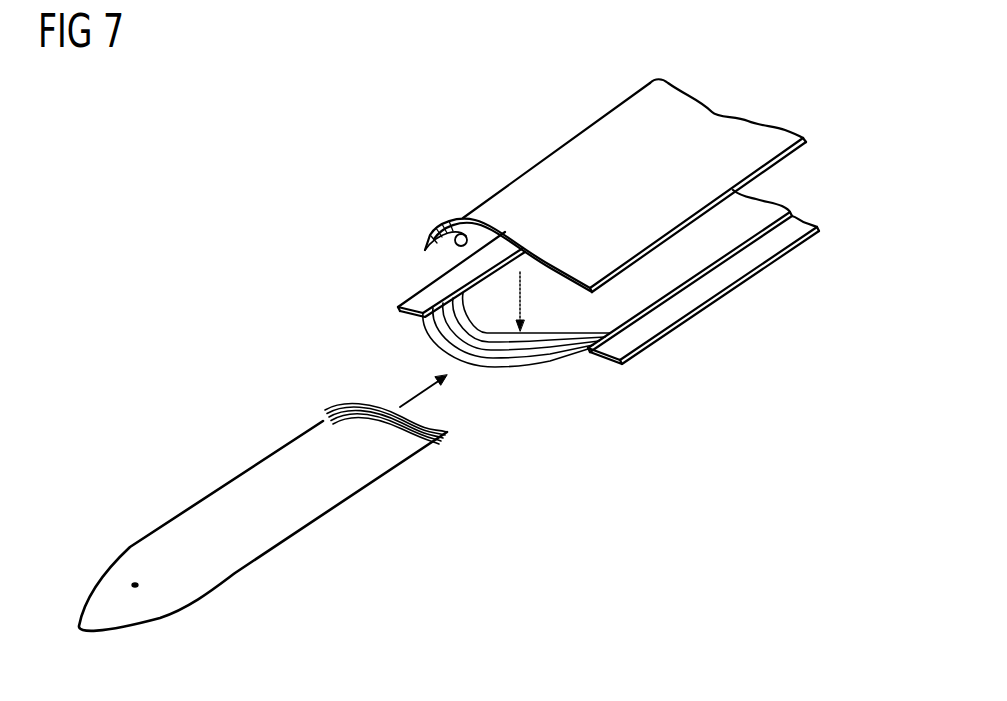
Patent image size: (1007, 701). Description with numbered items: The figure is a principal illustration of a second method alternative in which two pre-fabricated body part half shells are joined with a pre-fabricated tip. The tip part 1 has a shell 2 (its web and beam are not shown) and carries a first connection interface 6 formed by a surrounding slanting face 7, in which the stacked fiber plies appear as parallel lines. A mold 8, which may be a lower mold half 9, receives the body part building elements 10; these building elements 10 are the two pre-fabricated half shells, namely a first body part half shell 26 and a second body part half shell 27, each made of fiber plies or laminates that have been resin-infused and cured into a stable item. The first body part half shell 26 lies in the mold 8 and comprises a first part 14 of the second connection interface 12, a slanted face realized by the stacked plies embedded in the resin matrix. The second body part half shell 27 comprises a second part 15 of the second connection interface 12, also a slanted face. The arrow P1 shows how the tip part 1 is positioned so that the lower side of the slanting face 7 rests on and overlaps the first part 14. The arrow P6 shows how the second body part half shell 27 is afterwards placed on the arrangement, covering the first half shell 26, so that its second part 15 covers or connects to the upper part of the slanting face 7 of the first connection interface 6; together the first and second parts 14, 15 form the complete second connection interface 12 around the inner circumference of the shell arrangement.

The tip part 1 is at (93, 583).
The shell 2 is at (153, 560).
The first connection interface 6 is at (346, 390).
The slanting face 7 is at (377, 431).
The mold 8 is at (672, 338).
The lower mold half 9 is at (714, 297).
The body part building elements 10 is at (777, 96).
The second connection interface 12 is at (483, 388).
The first part of the second connection interface 14 is at (520, 360).
The second part of the second connection interface 15 is at (460, 233).
The first body part half shell 26 is at (703, 252).
The second body part half shell 27 is at (567, 162).
The arrow P1 is at (413, 396).
The arrow P6 is at (523, 290).